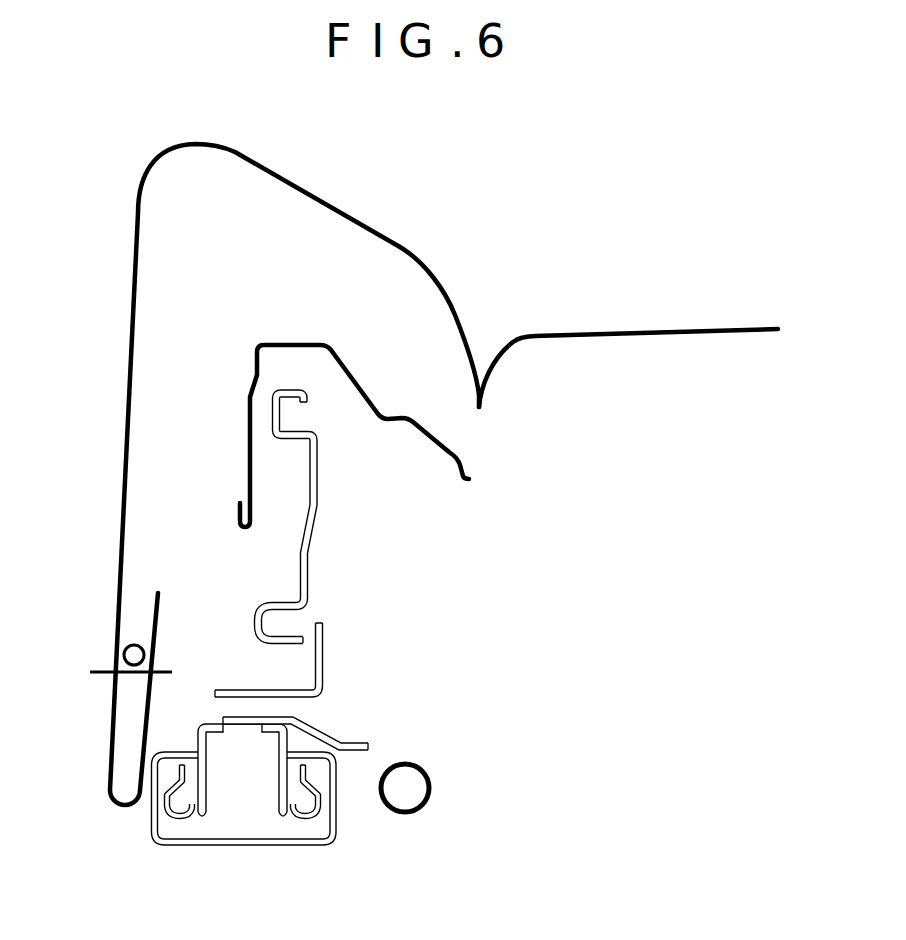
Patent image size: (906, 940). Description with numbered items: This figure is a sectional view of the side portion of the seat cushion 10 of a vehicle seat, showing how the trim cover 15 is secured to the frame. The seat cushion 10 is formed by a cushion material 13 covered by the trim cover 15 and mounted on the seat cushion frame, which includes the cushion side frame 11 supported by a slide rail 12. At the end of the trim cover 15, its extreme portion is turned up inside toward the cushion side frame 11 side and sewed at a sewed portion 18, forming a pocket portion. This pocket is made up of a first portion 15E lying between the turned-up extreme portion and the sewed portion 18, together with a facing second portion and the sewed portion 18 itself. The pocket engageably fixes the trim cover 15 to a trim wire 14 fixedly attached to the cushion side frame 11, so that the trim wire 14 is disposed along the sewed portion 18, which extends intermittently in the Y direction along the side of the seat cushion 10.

The seat cushion 10 is at (639, 317).
The cushion side frame 11 is at (322, 507).
The slide rail 12 is at (198, 847).
The cushion material 13 is at (433, 328).
The trim wire 14 is at (127, 647).
The trim cover 15 is at (136, 277).
The first portion 15E is at (157, 632).
The sewed portion 18 is at (100, 675).